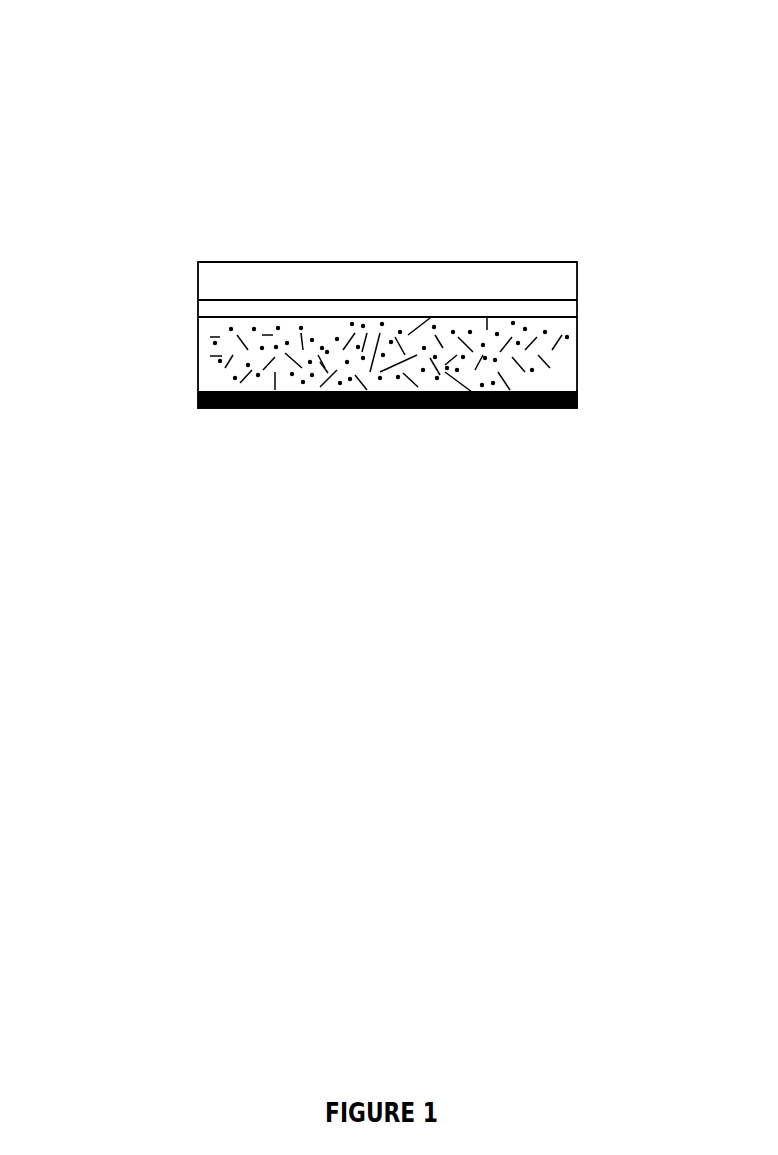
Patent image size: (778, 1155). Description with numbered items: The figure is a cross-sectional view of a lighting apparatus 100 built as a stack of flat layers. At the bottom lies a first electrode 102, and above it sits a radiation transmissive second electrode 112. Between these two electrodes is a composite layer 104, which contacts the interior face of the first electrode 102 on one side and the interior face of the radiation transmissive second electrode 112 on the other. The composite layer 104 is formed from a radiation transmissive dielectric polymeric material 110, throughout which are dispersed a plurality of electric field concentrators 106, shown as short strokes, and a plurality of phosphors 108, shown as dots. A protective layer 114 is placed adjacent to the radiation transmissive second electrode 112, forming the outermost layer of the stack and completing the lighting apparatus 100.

The lighting apparatus 100 is at (118, 98).
The first electrode 102 is at (562, 409).
The composite layer 104 is at (197, 352).
The electric field concentrators 106 is at (442, 354).
The phosphors 108 is at (547, 332).
The radiation transmissive dielectric polymeric material 110 is at (209, 371).
The radiation transmissive second electrode 112 is at (197, 310).
The protective layer 114 is at (523, 256).